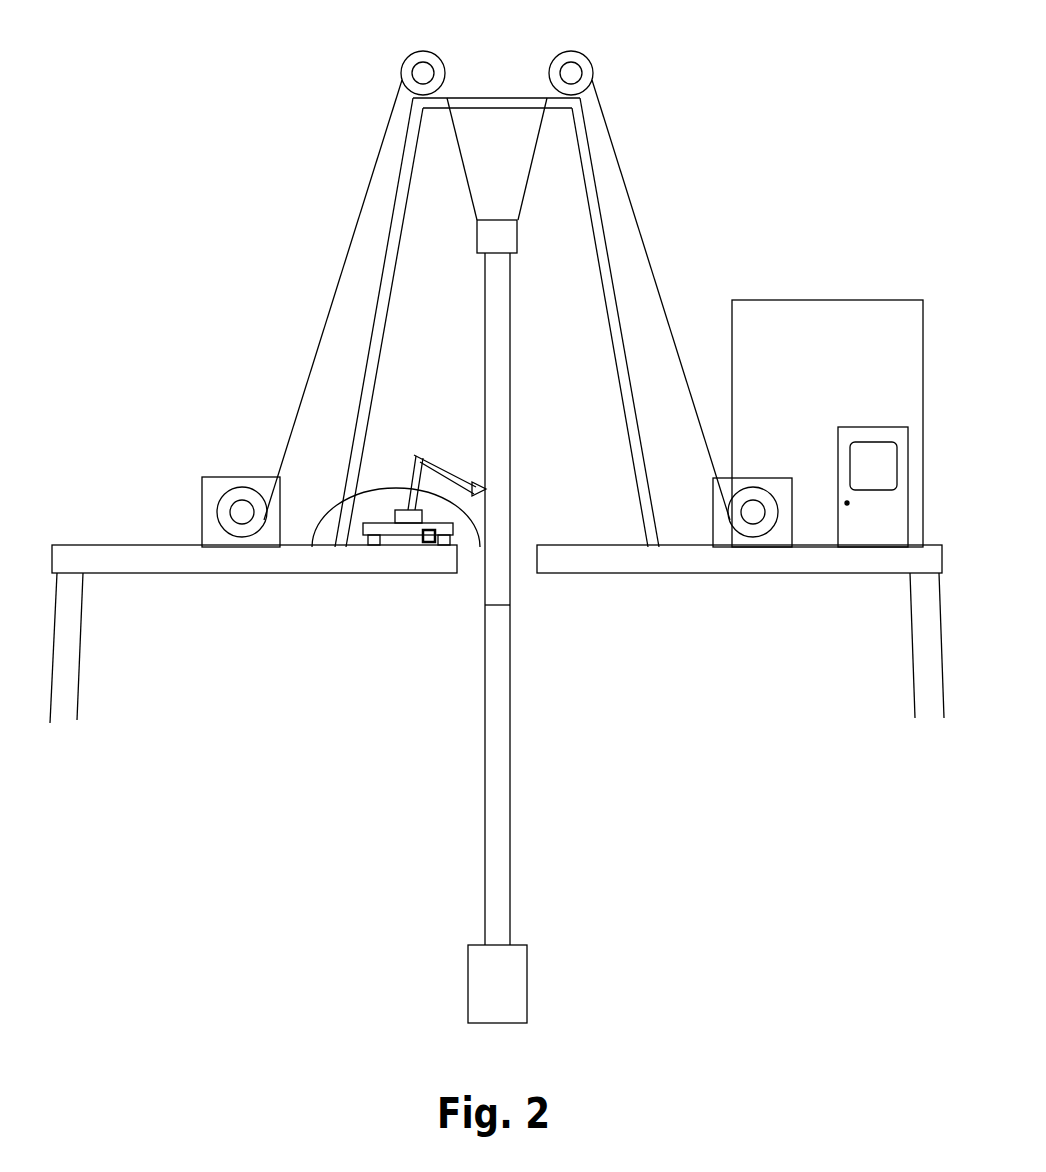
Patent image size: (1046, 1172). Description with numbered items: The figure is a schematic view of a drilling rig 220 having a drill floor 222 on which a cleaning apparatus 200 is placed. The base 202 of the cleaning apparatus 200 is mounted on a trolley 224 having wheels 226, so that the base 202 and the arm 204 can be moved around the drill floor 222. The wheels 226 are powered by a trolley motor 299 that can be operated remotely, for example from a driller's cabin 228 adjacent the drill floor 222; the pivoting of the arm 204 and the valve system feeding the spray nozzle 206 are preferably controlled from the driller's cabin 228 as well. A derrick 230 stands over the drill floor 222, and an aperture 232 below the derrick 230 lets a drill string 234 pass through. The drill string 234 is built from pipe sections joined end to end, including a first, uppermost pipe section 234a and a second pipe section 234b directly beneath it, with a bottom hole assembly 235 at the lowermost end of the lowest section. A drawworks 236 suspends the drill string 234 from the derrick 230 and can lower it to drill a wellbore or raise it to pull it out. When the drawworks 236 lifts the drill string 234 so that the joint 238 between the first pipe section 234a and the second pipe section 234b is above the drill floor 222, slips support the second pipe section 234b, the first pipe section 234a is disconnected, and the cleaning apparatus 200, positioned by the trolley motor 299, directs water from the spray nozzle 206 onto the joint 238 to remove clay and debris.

The cleaning apparatus 200 is at (383, 527).
The base 202 is at (312, 547).
The arm 204 is at (437, 457).
The spray nozzle 206 is at (473, 487).
The drilling rig 220 is at (453, 280).
The drill floor 222 is at (123, 545).
The trolley 224 is at (385, 537).
The wheels 226 is at (367, 545).
The driller's cabin 228 is at (823, 300).
The derrick 230 is at (493, 97).
The aperture 232 is at (527, 563).
The drill string 234 is at (519, 599).
The first pipe section 234a is at (483, 563).
The second pipe section 234b is at (513, 775).
The bottom hole assembly 235 is at (528, 987).
The drawworks 236 is at (240, 477).
The joint 238 is at (500, 607).
The trolley motor 299 is at (428, 542).